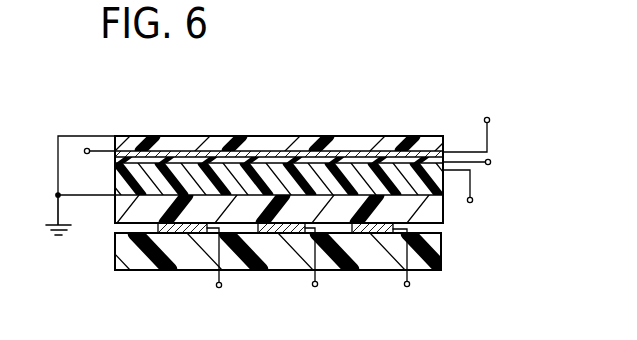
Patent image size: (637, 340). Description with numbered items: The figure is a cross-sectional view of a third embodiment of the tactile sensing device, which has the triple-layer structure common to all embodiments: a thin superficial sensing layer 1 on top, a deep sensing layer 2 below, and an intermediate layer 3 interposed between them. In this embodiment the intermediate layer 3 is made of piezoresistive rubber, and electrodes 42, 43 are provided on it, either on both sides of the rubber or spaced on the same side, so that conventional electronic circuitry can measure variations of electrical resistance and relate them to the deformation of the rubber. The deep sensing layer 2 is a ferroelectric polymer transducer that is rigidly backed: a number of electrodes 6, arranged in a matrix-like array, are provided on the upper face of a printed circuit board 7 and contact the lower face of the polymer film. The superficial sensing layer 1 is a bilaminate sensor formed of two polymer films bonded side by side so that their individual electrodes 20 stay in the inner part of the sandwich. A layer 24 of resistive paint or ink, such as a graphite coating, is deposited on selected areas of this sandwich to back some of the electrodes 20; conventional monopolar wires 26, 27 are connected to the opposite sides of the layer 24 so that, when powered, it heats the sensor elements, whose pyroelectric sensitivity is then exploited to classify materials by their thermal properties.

The superficial sensing layer 1 is at (303, 145).
The deep sensing layer 2 is at (428, 213).
The intermediate layer 3 is at (377, 172).
The electrodes 6 is at (181, 235).
The printed circuit board 7 is at (440, 257).
The individual electrodes 20 is at (489, 117).
The layer of resistive paint 24 is at (200, 151).
The monopolar wire 26 is at (87, 148).
The monopolar wire 27 is at (491, 163).
The electrode 42 is at (473, 200).
The electrode 43 is at (88, 196).